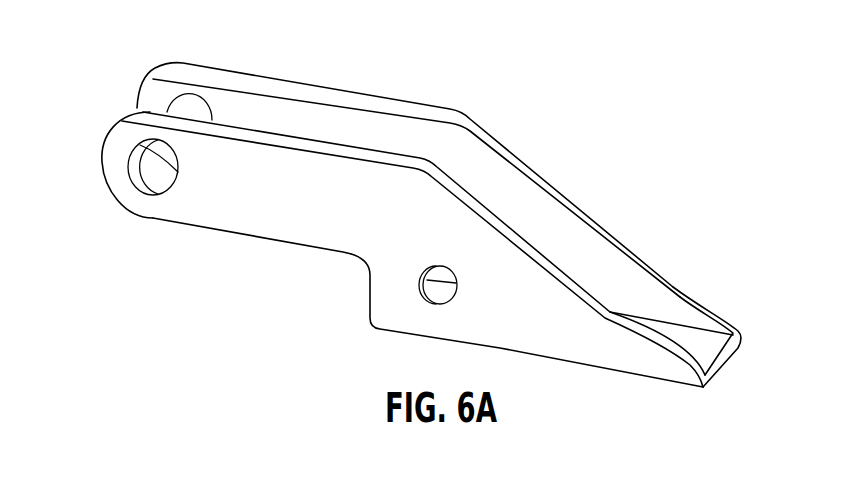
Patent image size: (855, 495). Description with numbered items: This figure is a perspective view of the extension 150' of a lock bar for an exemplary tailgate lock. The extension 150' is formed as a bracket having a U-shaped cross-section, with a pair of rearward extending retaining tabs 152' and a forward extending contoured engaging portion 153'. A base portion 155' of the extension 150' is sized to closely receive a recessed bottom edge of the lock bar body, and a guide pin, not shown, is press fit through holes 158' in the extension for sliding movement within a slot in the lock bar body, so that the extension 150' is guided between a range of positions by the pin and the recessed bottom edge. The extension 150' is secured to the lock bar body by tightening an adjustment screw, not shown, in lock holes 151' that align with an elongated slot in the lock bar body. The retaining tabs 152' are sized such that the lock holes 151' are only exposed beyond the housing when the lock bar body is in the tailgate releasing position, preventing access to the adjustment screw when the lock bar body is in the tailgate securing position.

The extension 150' is at (415, 232).
The lock holes 151' is at (119, 168).
The retaining tabs 152' is at (408, 155).
The contoured engaging portion 153' is at (690, 311).
The base portion 155' is at (428, 334).
The holes 158' is at (393, 293).